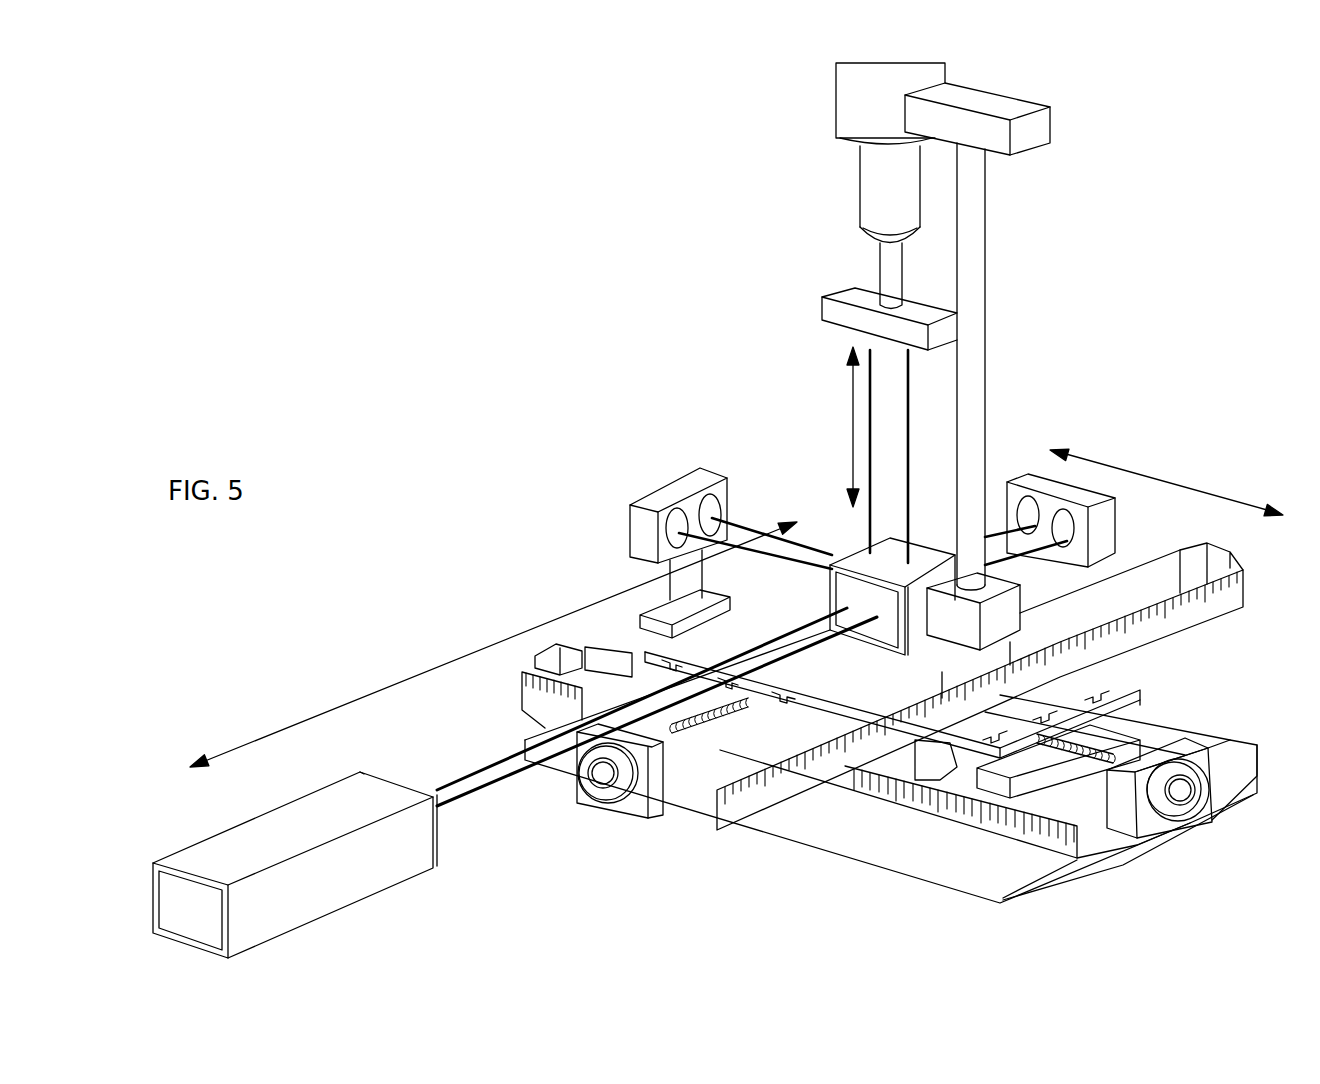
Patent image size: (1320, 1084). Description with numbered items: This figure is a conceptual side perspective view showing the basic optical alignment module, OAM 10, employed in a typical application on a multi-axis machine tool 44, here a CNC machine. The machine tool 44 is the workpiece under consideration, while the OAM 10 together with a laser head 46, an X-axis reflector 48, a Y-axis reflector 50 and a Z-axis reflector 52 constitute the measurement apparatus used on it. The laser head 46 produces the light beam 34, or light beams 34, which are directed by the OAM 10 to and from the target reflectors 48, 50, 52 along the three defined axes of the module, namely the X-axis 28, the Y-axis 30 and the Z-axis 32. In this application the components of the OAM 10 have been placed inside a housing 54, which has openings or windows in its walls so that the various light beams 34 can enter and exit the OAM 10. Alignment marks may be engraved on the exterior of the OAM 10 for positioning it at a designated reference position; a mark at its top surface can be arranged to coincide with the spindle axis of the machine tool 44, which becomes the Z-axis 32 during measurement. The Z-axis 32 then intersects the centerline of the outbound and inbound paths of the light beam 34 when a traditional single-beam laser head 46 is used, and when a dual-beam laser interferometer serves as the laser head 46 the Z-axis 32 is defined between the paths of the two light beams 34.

The optical alignment module 10 is at (863, 595).
The X-axis 28 is at (493, 644).
The Y-axis 30 is at (1166, 473).
The Z-axis 32 is at (838, 427).
The light beam 34 is at (470, 774).
The multi-axis machine tool 44 is at (975, 870).
The laser head 46 is at (343, 888).
The X-axis reflector 48 is at (1033, 482).
The Y-axis reflector 50 is at (845, 313).
The Z-axis reflector 52 is at (635, 533).
The housing 54 is at (917, 627).